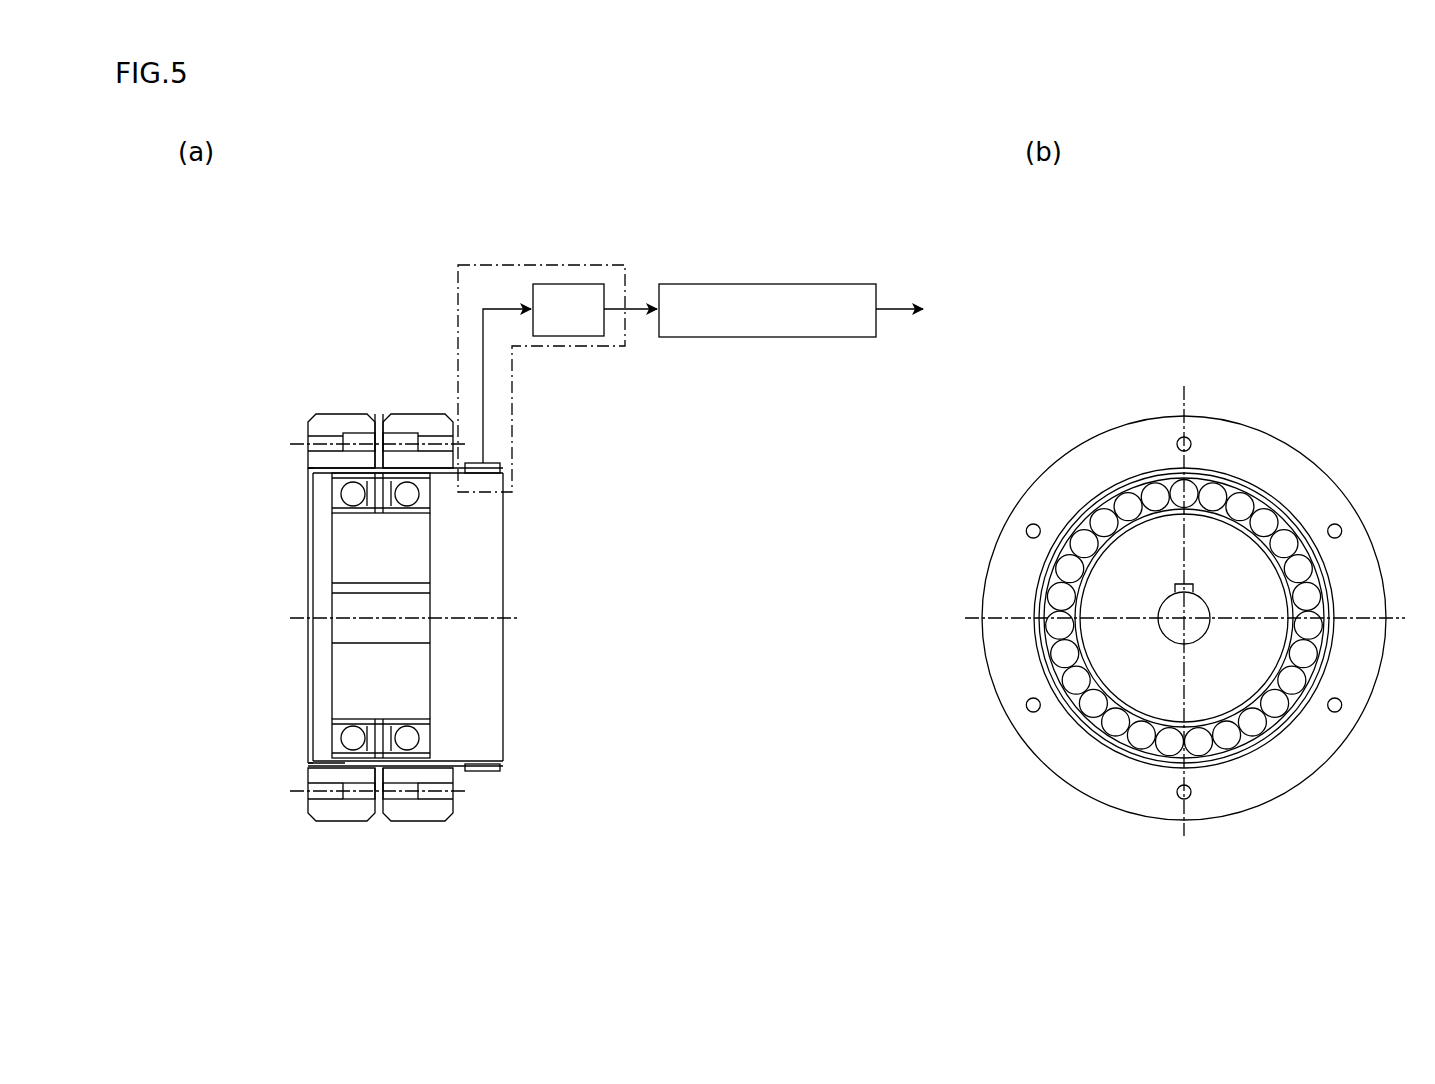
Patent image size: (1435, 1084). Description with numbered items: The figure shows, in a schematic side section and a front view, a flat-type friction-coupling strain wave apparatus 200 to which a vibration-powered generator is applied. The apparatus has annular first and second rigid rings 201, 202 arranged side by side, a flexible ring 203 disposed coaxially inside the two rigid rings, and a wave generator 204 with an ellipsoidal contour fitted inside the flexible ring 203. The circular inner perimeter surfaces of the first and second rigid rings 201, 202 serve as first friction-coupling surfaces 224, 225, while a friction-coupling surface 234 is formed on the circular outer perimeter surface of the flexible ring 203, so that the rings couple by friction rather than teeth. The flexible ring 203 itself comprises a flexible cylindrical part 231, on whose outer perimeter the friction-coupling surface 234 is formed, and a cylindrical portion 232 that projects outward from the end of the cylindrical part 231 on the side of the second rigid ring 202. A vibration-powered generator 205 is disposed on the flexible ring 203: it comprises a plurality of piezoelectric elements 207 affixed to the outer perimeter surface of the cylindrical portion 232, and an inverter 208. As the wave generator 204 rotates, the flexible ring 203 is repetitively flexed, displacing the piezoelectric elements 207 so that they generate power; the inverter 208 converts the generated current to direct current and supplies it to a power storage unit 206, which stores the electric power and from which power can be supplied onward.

The friction-coupling strain wave apparatus 200 is at (265, 405).
The first rigid ring 201 is at (338, 828).
The second rigid ring 202 is at (423, 828).
The flexible ring 203 is at (323, 750).
The wave generator 204 is at (323, 545).
The vibration-powered generator 205 is at (503, 262).
The power storage unit 206 is at (763, 281).
The piezoelectric element 207 is at (490, 461).
The inverter 208 is at (570, 283).
The first friction-coupling surface 224 is at (352, 762).
The friction-coupling surface 225 is at (402, 763).
The flexible cylindrical part 231 is at (335, 767).
The cylindrical portion 232 is at (478, 477).
The friction-coupling surface 234 is at (366, 768).